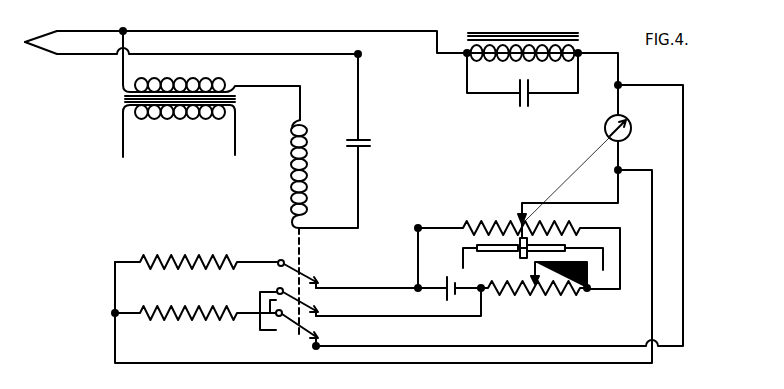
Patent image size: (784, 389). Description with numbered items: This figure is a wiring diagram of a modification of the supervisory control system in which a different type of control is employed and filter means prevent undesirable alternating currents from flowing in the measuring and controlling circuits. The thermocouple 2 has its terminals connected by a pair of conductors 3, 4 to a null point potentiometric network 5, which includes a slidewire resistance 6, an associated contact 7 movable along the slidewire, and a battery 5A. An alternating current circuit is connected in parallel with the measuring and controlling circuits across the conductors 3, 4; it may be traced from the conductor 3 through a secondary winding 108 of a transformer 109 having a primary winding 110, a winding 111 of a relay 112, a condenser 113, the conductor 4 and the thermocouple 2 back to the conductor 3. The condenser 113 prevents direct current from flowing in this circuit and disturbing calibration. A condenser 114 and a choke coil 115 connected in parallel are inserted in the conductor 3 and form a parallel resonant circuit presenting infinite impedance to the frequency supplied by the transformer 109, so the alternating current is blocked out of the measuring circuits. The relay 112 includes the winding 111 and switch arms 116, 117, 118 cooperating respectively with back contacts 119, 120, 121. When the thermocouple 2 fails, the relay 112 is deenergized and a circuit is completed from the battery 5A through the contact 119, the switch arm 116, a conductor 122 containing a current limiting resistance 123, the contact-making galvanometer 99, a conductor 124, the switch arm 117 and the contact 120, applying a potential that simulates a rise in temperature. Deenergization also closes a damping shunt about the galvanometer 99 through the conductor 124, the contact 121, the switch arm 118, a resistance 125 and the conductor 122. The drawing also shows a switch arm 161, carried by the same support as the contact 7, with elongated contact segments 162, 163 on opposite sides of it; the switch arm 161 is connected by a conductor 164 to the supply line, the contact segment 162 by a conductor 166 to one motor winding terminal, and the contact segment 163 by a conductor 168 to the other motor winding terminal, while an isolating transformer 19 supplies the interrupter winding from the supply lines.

The thermocouple 2 is at (37, 49).
The conductor 3 is at (78, 31).
The conductor 4 is at (78, 56).
The secondary winding 108 is at (166, 86).
The transformer 109 is at (125, 100).
The primary winding 110 is at (170, 122).
The winding 111 is at (308, 138).
The relay 112 is at (322, 141).
The condenser 113 is at (374, 142).
The condenser 114 is at (525, 110).
The choke coil 115 is at (515, 64).
The contact-making galvanometer 99 is at (630, 123).
The conductor 124 is at (685, 142).
The isolating transformer 19 is at (571, 377).
The conductor 122 is at (262, 262).
The current limiting resistance 123 is at (184, 257).
The resistance 125 is at (186, 308).
The switch arm 116 is at (379, 308).
The switch arm 117 is at (285, 290).
The switch arm 118 is at (284, 317).
The back contact 119 is at (318, 284).
The back contact 120 is at (318, 314).
The back contact 121 is at (318, 340).
The null point potentiometric network 5 is at (449, 270).
The battery 5A is at (449, 297).
The slidewire resistance 6 is at (470, 222).
The contact 7 is at (517, 214).
The switch arm 161 is at (528, 226).
The contact segment 162 is at (553, 252).
The contact segment 163 is at (524, 259).
The conductor 164 is at (530, 290).
The conductor 166 is at (604, 264).
The conductor 168 is at (465, 258).